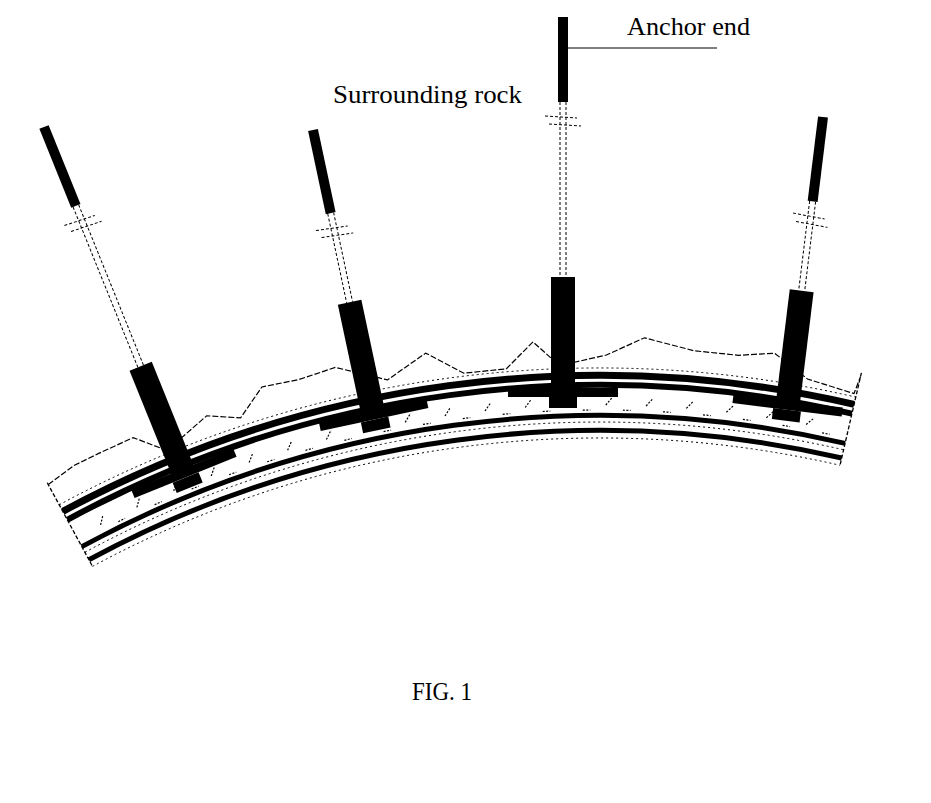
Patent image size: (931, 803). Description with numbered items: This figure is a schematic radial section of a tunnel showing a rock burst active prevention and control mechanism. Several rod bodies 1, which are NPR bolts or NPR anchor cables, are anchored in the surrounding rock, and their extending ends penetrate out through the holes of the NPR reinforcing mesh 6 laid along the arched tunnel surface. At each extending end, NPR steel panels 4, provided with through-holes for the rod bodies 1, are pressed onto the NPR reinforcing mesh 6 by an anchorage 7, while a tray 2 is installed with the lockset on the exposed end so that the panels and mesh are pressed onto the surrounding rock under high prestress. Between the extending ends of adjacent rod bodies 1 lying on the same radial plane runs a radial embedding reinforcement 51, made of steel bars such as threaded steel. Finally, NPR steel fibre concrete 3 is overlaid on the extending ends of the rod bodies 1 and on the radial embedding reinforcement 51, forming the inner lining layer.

The rod bodies 1 is at (372, 425).
The tray 2 is at (222, 463).
The NPR steel fibre concrete 3 is at (137, 537).
The NPR steel panels 4 is at (765, 393).
The NPR reinforcing mesh 6 is at (323, 403).
The anchorage 7 is at (798, 447).
The radial embedding reinforcement 51 is at (703, 433).